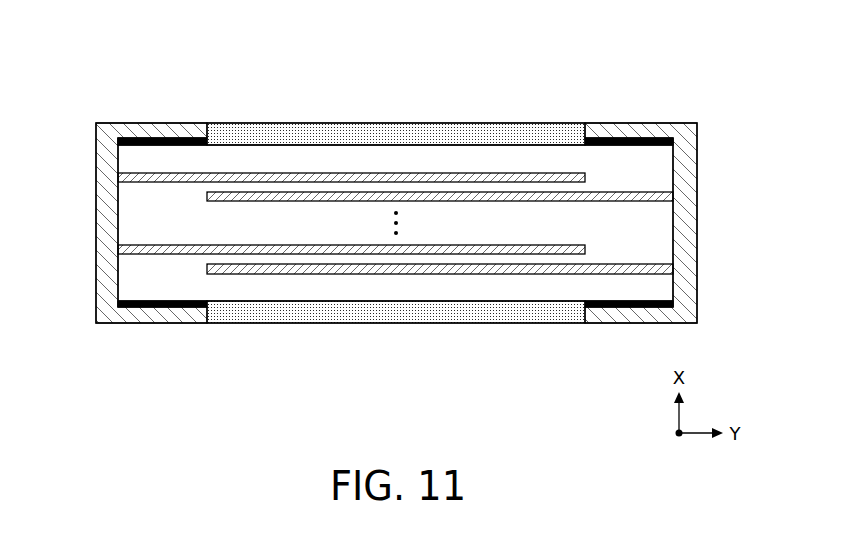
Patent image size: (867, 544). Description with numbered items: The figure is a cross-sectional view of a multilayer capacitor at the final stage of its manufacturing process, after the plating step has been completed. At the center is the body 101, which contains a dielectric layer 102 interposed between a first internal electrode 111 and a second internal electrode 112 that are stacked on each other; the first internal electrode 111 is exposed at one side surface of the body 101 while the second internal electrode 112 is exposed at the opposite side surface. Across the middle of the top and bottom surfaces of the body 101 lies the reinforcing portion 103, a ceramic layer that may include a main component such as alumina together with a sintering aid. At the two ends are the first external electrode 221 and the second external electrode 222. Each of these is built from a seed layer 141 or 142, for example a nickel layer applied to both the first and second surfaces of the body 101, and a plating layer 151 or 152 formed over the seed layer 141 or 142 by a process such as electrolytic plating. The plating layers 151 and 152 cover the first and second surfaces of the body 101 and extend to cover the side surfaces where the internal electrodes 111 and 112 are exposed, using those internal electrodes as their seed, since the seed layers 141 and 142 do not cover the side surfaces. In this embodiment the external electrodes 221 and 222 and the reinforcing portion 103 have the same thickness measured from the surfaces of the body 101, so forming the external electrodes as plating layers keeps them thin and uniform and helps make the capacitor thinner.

The body 101 is at (488, 145).
The dielectric layer 102 is at (395, 172).
The reinforcing portion 103 is at (395, 136).
The first internal electrode 111 is at (140, 172).
The second internal electrode 112 is at (642, 200).
The seed layer 141 is at (162, 189).
The seed layer 142 is at (629, 189).
The plating layer 151 is at (133, 125).
The plating layer 152 is at (660, 125).
The first external electrode 221 is at (151, 175).
The second external electrode 222 is at (641, 175).